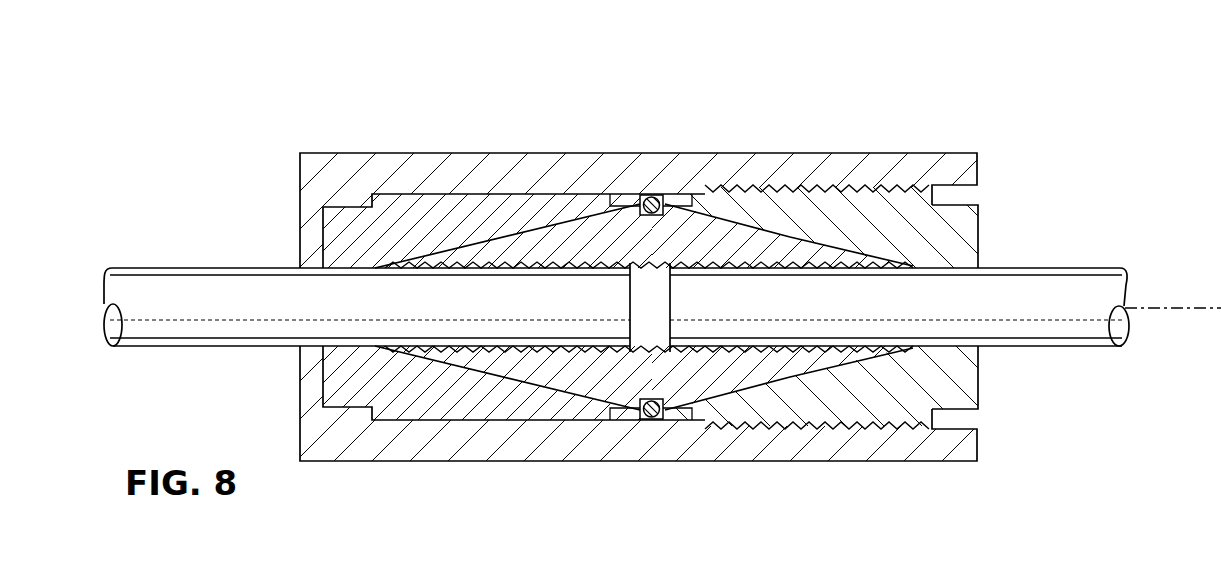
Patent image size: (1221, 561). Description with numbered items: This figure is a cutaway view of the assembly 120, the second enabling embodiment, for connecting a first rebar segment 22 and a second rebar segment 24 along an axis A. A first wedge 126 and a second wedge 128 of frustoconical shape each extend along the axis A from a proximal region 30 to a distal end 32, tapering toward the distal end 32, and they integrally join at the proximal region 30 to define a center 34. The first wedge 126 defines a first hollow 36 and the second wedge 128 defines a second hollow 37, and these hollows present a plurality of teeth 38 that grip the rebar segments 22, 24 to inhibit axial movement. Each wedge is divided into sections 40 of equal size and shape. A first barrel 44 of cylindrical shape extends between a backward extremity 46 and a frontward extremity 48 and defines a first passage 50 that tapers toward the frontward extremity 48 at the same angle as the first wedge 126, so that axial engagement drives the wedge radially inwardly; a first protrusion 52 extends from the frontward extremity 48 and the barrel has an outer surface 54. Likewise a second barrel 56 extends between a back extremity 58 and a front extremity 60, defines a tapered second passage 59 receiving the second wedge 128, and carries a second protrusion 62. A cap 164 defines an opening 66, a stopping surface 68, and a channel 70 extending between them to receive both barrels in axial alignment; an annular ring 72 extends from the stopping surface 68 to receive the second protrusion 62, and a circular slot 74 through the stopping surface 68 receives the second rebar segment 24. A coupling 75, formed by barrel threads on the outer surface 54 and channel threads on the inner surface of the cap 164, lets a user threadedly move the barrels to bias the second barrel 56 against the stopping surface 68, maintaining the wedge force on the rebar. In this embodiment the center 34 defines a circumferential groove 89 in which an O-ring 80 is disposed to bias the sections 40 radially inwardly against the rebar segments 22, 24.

The first rebar segment 22 is at (1083, 280).
The second rebar segment 24 is at (163, 278).
The proximal region 30 is at (578, 223).
The distal end 32 is at (375, 270).
The center 34 is at (660, 193).
The first hollow 36 is at (850, 268).
The second hollow 37 is at (436, 270).
The teeth 38 is at (505, 348).
The sections 40 is at (750, 365).
The first barrel 44 is at (910, 433).
The backward extremity 46 is at (940, 186).
The frontward extremity 48 is at (638, 197).
The first passage 50 is at (727, 425).
The first protrusion 52 is at (980, 375).
The outer surface 54 is at (797, 189).
The second barrel 56 is at (397, 426).
The back extremity 58 is at (622, 418).
The second passage 59 is at (497, 228).
The front extremity 60 is at (363, 415).
The second protrusion 62 is at (328, 378).
The opening 66 is at (968, 430).
The stopping surface 68 is at (325, 236).
The channel 70 is at (867, 200).
The annular ring 72 is at (347, 202).
The slot 74 is at (307, 335).
The coupling 75 is at (838, 433).
The O-ring 80 is at (650, 422).
The groove 89 is at (655, 417).
The assembly 120 is at (1067, 150).
The first wedge 126 is at (808, 231).
The second wedge 128 is at (423, 246).
The cap 164 is at (352, 151).
The axis A is at (1195, 306).